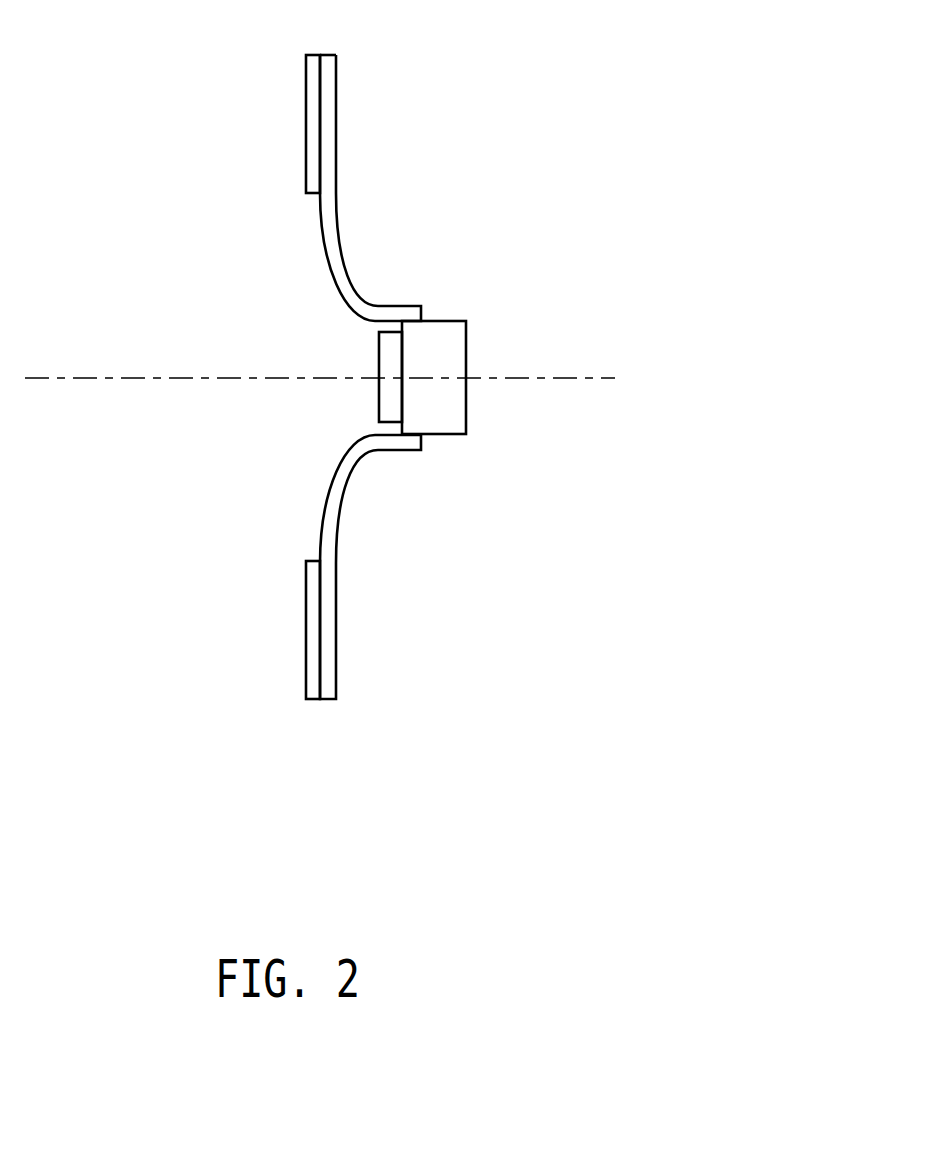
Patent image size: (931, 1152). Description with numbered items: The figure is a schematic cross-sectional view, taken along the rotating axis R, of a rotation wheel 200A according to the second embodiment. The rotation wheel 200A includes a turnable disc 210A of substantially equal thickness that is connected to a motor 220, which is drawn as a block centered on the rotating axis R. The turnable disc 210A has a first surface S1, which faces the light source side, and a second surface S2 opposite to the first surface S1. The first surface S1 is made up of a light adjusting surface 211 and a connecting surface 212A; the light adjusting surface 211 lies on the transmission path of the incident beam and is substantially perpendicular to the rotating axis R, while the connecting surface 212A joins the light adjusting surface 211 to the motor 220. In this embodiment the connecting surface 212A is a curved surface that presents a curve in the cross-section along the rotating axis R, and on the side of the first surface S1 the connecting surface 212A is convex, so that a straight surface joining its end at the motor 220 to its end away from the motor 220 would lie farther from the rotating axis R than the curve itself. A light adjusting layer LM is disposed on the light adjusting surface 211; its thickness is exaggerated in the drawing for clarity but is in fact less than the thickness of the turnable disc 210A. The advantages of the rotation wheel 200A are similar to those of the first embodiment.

The rotation wheel 200A is at (672, 868).
The turnable disc 210A is at (438, 350).
The light adjusting surface 211 is at (340, 352).
The connecting surface 212A is at (334, 267).
The motor 220 is at (452, 349).
The first surface S1 is at (318, 82).
The second surface S2 is at (338, 79).
The light adjusting layer LM is at (313, 669).
The rotating axis R is at (85, 378).